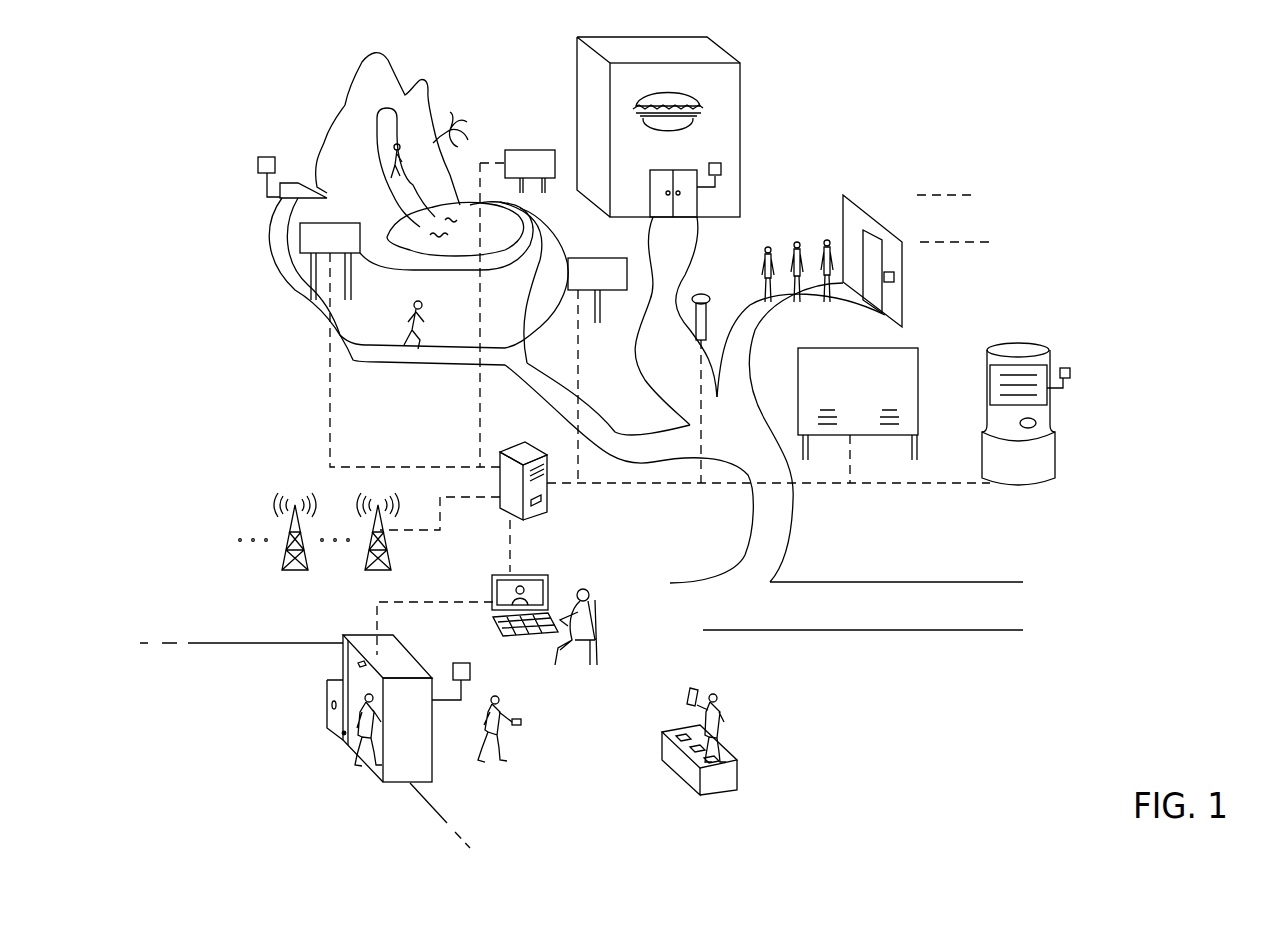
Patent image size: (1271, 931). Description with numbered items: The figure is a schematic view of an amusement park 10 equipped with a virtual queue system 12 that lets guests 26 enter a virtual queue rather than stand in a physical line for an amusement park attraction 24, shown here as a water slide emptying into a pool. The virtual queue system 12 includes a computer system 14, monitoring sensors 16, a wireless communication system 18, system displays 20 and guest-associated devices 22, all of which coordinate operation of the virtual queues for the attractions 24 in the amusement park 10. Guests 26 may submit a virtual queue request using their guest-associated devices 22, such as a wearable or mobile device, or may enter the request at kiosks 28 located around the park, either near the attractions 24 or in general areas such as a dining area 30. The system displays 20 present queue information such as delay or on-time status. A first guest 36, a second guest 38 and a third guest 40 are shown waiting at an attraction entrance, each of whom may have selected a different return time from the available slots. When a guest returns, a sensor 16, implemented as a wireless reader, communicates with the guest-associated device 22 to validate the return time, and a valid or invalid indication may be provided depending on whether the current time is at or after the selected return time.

The amusement park 10 is at (837, 47).
The virtual queue system 12 is at (284, 390).
The computer system 14 is at (509, 443).
The monitoring sensor 16 is at (258, 165).
The wireless communication system 18 is at (311, 478).
The system display 20 is at (328, 222).
The guest-associated device 22 is at (513, 725).
The amusement park attraction 24 is at (347, 103).
The guest 26 is at (503, 706).
The kiosk 28 is at (708, 296).
The dining area 30 is at (727, 55).
The first guest 36 is at (768, 246).
The second guest 38 is at (797, 241).
The third guest 40 is at (827, 239).